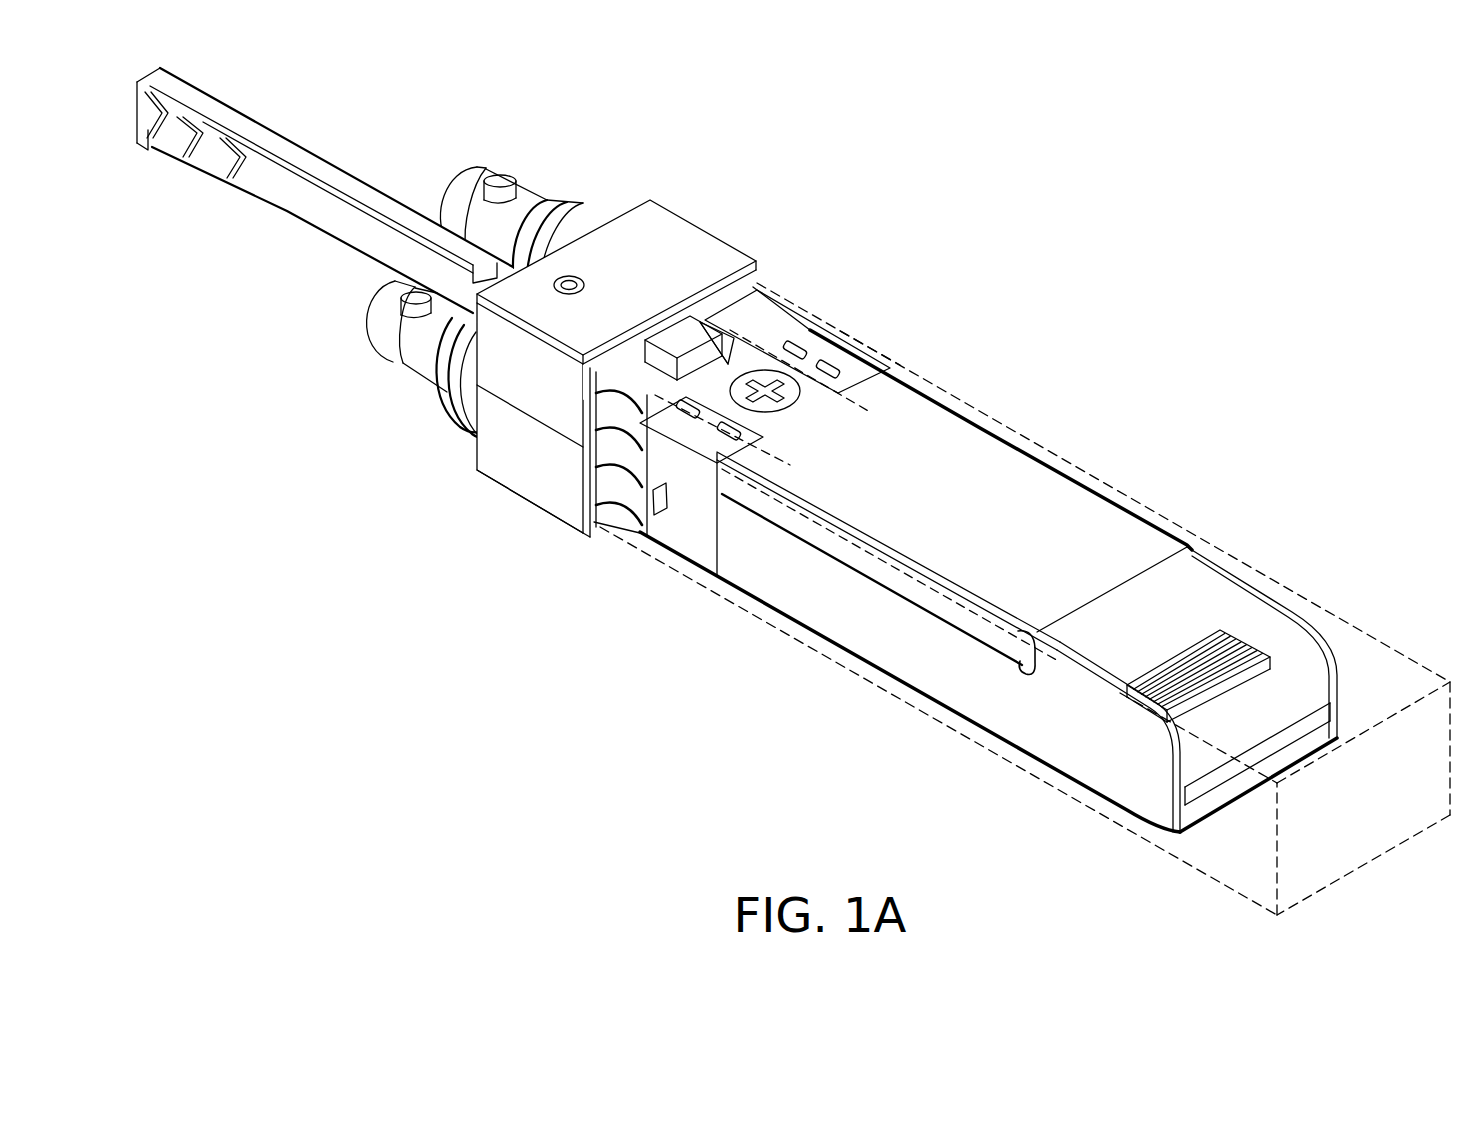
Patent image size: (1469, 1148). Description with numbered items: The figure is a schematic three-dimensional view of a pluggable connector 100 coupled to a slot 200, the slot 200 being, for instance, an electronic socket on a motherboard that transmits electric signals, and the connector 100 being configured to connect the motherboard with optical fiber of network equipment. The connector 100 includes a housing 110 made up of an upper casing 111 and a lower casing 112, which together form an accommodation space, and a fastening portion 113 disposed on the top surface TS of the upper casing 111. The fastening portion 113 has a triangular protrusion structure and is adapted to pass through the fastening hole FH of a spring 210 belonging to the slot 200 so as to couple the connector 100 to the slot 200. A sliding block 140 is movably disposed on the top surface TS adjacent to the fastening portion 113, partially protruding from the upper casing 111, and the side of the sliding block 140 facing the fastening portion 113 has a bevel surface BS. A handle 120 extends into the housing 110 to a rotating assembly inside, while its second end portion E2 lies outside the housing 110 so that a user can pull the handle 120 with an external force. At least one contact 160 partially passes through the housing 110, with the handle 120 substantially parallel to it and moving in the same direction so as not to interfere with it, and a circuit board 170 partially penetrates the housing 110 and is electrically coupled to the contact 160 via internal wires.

The pluggable connector 100 is at (420, 518).
The housing 110 is at (461, 540).
The upper casing 111 is at (557, 395).
The lower casing 112 is at (570, 503).
The fastening portion 113 is at (640, 420).
The handle 120 is at (358, 190).
The sliding block 140 is at (684, 322).
The contact 160 is at (530, 207).
The circuit board 170 is at (1200, 628).
The slot 200 is at (1388, 647).
The spring 210 is at (870, 360).
The bevel surface BS is at (680, 345).
The fastening hole FH is at (742, 368).
The top surface TS is at (950, 458).
The second end portion E2 is at (176, 153).